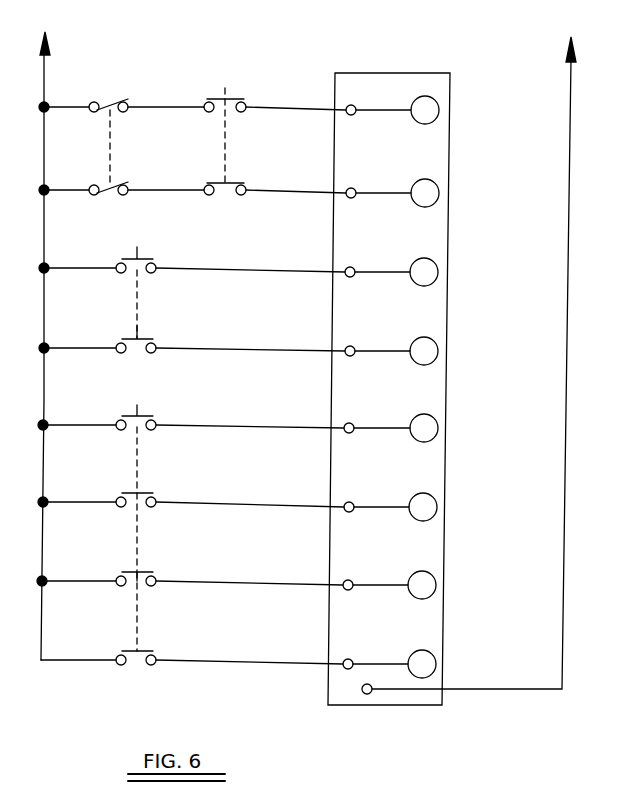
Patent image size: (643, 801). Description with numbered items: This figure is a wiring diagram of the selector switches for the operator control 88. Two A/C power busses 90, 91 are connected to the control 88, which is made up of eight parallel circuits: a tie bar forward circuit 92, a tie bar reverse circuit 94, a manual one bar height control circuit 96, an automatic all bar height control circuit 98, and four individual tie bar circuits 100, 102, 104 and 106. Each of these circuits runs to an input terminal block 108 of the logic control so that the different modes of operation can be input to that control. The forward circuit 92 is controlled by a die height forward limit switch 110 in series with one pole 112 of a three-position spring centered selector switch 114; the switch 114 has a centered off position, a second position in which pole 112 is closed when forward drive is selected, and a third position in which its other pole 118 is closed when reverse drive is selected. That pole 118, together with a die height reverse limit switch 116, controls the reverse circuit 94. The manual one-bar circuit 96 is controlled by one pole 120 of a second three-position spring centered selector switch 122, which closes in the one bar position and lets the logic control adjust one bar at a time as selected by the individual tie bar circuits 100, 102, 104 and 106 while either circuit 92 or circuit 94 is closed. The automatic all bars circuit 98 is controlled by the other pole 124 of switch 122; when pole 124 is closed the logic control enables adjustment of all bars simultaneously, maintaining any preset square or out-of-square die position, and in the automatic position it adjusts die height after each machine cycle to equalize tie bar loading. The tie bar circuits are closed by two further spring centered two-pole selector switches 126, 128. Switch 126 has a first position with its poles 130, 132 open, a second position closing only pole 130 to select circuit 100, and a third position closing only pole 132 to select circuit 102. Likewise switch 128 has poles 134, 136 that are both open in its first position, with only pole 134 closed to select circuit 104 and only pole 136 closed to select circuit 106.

The operator control 88 is at (284, 72).
The A/C power bus 90 is at (47, 62).
The A/C power bus 91 is at (572, 75).
The tie bar forward circuit 92 is at (146, 105).
The tie bar reverse circuit 94 is at (158, 188).
The manual one bar height control circuit 96 is at (190, 268).
The automatic all bar height control circuit 98 is at (193, 348).
The tie bar 16a circuit 100 is at (188, 425).
The tie bar 16b circuit 102 is at (240, 502).
The tie bar 18a circuit 104 is at (186, 581).
The tie bar 18b circuit 106 is at (203, 660).
The input terminal block 108 is at (431, 85).
The die height forward limit switch 110 is at (108, 100).
The pole of selector switch 114 112 is at (229, 96).
The three-position spring centered selector switch 114 is at (237, 152).
The die height reverse limit switch 116 is at (108, 185).
The pole of selector switch 114 118 is at (243, 183).
The pole of selector switch 122 120 is at (127, 258).
The three-position spring centered selector switch 122 is at (150, 307).
The pole of selector switch 122 124 is at (127, 337).
The three-position selector switch 126 is at (150, 470).
The three-position selector switch 128 is at (146, 622).
The pole of selector switch 126 130 is at (136, 405).
The pole of selector switch 126 132 is at (122, 492).
The pole of selector switch 128 134 is at (125, 572).
The pole of selector switch 128 136 is at (120, 651).